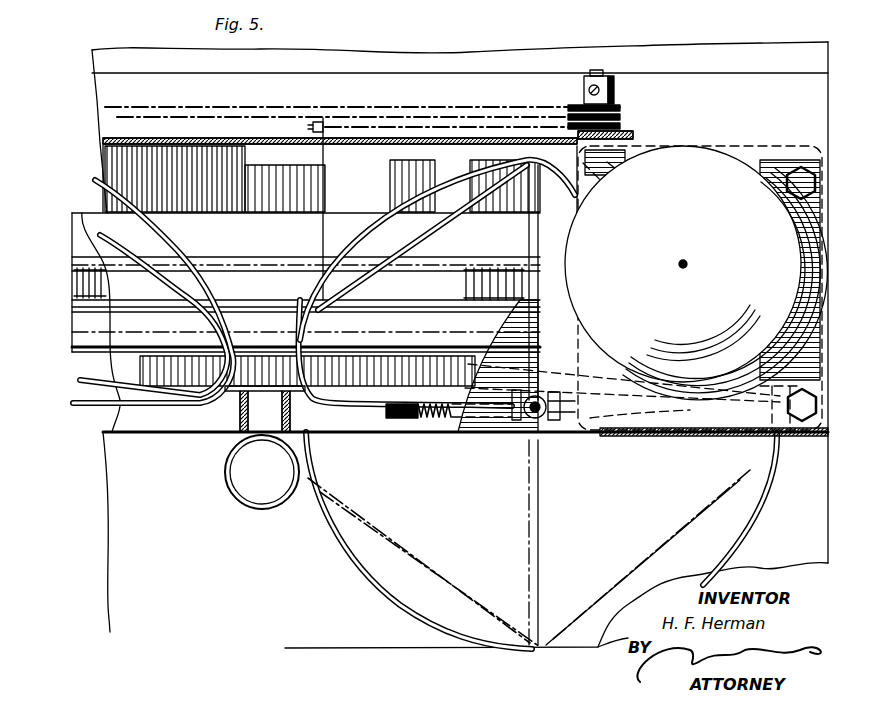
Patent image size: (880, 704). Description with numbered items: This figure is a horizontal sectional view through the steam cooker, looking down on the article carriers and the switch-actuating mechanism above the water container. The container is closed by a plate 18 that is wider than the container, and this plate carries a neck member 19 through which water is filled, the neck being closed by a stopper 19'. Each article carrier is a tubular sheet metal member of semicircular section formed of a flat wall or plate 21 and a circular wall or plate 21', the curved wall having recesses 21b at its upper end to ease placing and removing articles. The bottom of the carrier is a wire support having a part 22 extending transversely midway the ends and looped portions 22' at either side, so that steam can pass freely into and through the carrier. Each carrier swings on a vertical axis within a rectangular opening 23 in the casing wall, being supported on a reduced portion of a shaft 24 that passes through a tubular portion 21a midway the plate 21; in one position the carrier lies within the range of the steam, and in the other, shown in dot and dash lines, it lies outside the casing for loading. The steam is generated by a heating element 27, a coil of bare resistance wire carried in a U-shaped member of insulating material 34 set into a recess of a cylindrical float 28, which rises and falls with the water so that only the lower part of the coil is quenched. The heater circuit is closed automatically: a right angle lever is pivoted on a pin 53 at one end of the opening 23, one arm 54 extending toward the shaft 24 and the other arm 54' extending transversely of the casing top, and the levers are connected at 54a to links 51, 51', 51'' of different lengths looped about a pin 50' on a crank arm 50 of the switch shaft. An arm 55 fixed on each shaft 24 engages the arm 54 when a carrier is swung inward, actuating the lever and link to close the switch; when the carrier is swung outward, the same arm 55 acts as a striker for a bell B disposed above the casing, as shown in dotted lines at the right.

The plate 18 is at (122, 580).
The neck member 19 is at (262, 500).
The stopper 19' is at (253, 496).
The flat wall or plate 21 is at (292, 328).
The circular wall or plate 21' is at (474, 404).
The tubular portion 21a is at (540, 398).
The recesses 21b is at (232, 270).
The part of wire support 22 is at (534, 405).
The looped portions 22' is at (539, 404).
The opening 23 is at (800, 462).
The shaft 24 is at (530, 418).
The electric heating element 27 is at (86, 232).
The cylindrical float 28 is at (306, 282).
The U-shaped member of insulating material 34 is at (240, 310).
The crank arm 50 is at (645, 122).
The pin 50' is at (615, 60).
The link or rod 51 is at (382, 119).
The link or rod 51' is at (403, 107).
The link or rod 51'' is at (495, 104).
The pin 53 is at (345, 404).
The lever arm 54 is at (606, 414).
The lever arm 54' is at (340, 209).
The connection 54a is at (330, 120).
The arm 55 is at (440, 400).
The bell B is at (776, 210).